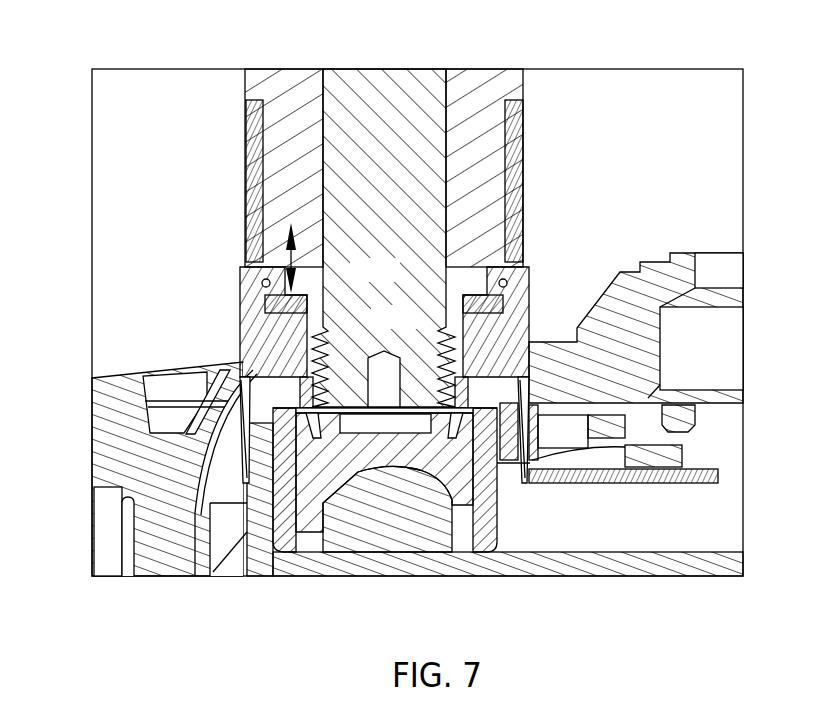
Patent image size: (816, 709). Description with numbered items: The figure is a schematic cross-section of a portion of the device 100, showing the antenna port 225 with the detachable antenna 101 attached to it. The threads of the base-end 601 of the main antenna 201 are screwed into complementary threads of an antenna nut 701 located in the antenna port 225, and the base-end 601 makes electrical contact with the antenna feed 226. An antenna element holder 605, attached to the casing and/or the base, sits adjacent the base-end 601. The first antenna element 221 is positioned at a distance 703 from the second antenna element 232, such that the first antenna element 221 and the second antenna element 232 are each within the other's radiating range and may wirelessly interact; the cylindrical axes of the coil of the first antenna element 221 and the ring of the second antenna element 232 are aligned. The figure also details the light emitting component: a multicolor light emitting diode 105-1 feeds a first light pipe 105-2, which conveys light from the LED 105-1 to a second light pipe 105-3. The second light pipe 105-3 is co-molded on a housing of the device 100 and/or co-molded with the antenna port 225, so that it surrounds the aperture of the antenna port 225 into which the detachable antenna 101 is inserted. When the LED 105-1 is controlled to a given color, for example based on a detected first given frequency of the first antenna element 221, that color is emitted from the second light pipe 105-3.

The device 100 is at (108, 401).
The detachable antenna 101 is at (543, 91).
The main antenna 201 is at (387, 82).
The first antenna element 221 is at (247, 150).
The antenna element holder 605 is at (248, 183).
The distance 703 is at (318, 258).
The base-end 601 is at (340, 344).
The second antenna element 232 is at (262, 300).
The antenna port 225 is at (474, 355).
The second light pipe 105-3 is at (248, 338).
The multicolor light emitting diode (LED) 105-1 is at (670, 483).
The first light pipe 105-2 is at (589, 483).
The antenna nut 701 is at (290, 552).
The antenna feed 226 is at (357, 423).